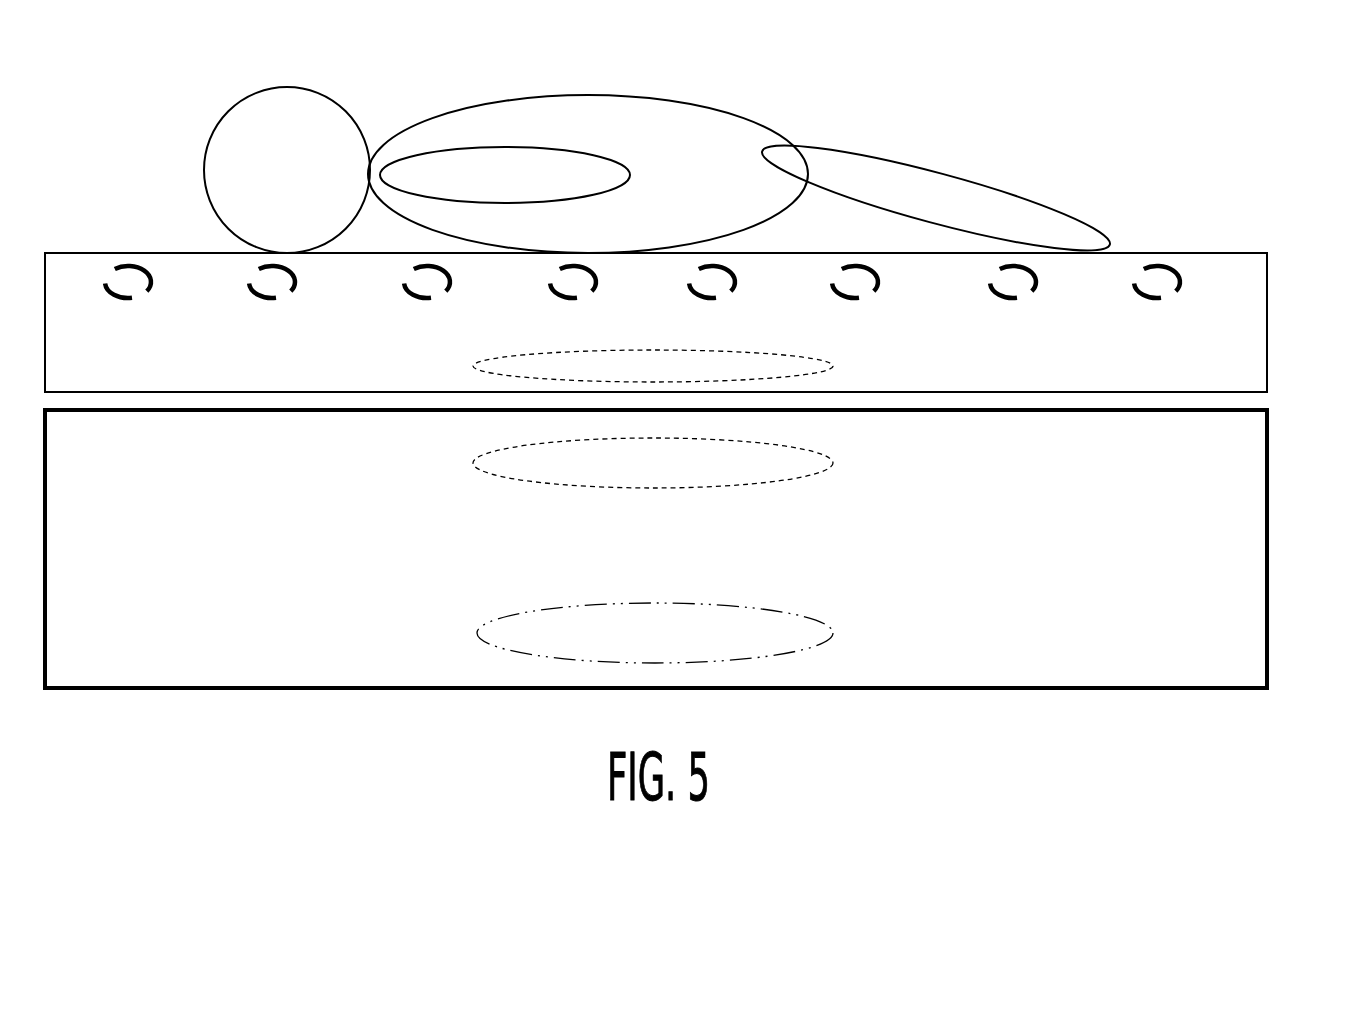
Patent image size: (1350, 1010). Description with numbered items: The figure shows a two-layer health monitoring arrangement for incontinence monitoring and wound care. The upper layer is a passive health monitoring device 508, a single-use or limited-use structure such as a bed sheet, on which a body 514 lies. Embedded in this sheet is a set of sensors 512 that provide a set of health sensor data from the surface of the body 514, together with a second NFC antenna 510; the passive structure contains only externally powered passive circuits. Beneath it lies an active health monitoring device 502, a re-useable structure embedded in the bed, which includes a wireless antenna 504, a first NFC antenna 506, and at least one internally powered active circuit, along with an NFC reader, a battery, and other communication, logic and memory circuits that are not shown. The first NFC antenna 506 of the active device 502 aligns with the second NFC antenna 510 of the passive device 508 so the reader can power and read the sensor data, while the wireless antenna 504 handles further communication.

The active health monitoring device 502 is at (1268, 658).
The wireless antenna 504 is at (831, 638).
The first NFC antenna 506 is at (834, 465).
The passive health monitoring device 508 is at (1268, 282).
The second NFC antenna 510 is at (834, 369).
The set of sensors 512 is at (133, 265).
The body 514 is at (708, 107).